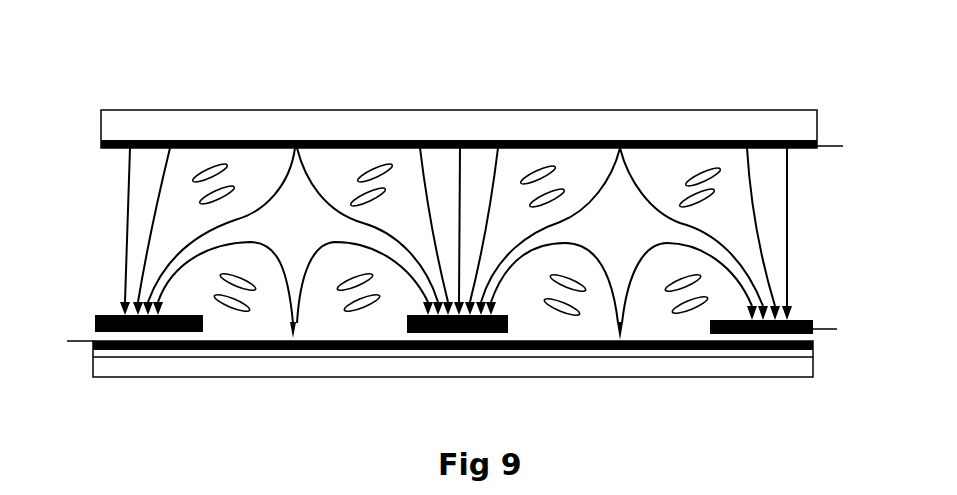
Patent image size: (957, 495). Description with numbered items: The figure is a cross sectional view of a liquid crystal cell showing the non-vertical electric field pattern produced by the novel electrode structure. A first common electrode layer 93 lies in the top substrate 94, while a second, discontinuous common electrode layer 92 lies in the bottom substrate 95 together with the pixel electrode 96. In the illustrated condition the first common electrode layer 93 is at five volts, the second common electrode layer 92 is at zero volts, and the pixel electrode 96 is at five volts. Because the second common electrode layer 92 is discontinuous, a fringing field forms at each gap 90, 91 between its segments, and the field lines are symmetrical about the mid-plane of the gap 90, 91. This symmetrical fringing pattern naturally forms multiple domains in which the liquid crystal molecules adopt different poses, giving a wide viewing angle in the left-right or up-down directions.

The gap 90 is at (293, 322).
The gap 91 is at (620, 322).
The second common electrode layer 92 is at (120, 313).
The first common electrode layer 93 is at (115, 149).
The top substrate 94 is at (755, 132).
The bottom substrate 95 is at (137, 362).
The pixel electrode 96 is at (743, 352).